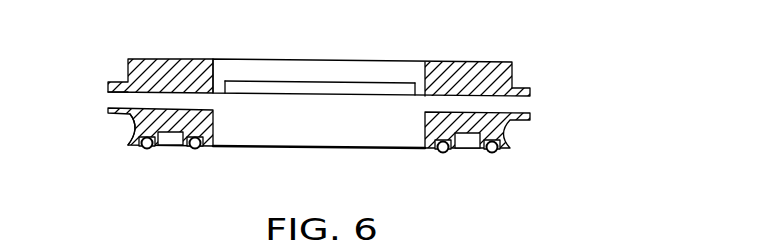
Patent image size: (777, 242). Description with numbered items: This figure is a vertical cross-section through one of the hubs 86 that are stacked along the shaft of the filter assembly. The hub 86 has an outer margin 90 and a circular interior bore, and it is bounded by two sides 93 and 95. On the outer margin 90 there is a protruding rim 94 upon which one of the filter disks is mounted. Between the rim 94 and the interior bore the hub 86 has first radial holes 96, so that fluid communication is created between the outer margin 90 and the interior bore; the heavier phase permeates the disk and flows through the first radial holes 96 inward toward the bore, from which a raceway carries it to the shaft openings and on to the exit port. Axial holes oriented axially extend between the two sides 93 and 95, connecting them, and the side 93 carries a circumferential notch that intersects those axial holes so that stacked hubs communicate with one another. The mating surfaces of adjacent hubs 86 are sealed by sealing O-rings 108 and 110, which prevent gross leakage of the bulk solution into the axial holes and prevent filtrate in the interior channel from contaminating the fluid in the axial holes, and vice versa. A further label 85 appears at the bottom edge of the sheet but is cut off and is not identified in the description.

The side 95 is at (207, 58).
The outer margin 90 is at (512, 73).
The first radial holes 96 is at (113, 100).
The protruding rim 94 is at (130, 112).
The hub 86 is at (134, 126).
The side 93 is at (212, 150).
The lower element 85 is at (208, 237).
The sealing O-ring 108 is at (496, 153).
The sealing O-ring 110 is at (443, 153).